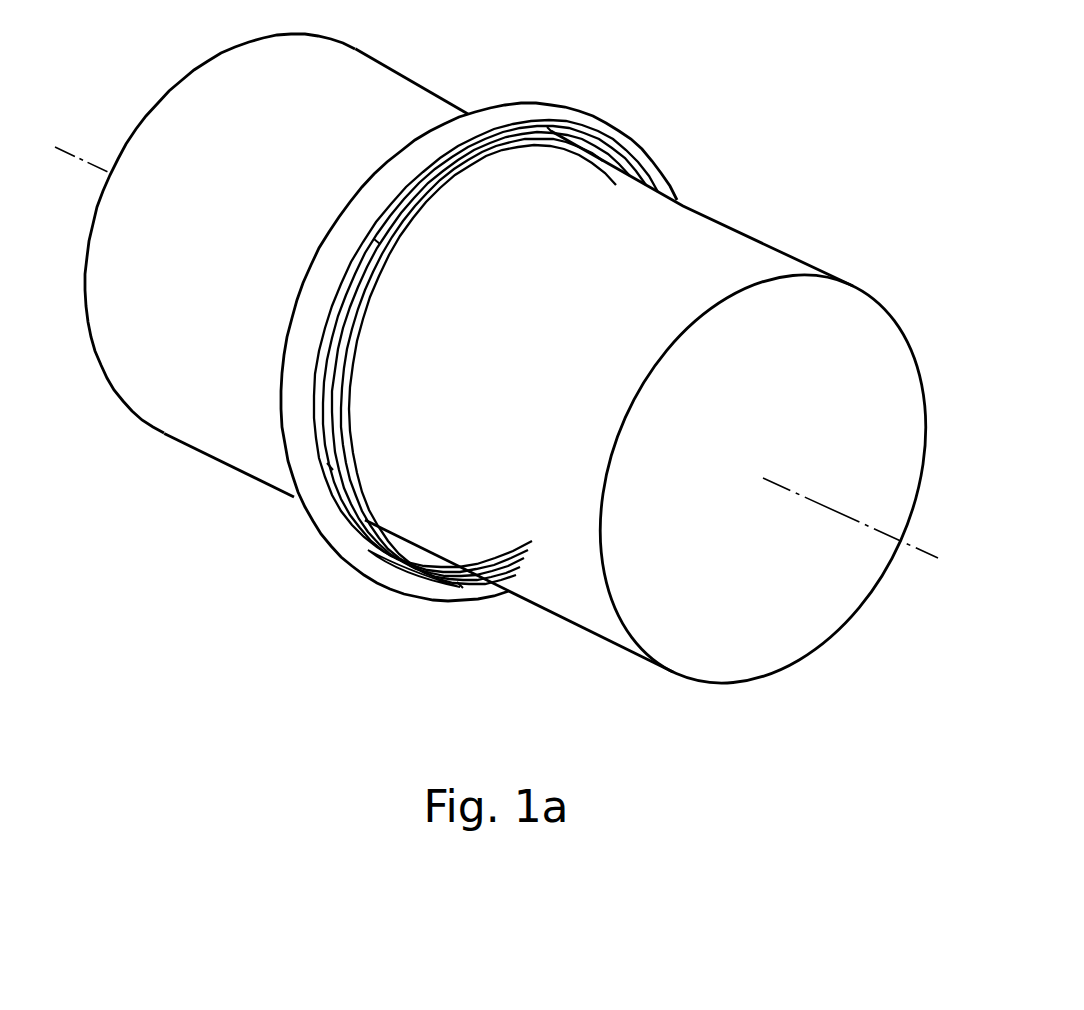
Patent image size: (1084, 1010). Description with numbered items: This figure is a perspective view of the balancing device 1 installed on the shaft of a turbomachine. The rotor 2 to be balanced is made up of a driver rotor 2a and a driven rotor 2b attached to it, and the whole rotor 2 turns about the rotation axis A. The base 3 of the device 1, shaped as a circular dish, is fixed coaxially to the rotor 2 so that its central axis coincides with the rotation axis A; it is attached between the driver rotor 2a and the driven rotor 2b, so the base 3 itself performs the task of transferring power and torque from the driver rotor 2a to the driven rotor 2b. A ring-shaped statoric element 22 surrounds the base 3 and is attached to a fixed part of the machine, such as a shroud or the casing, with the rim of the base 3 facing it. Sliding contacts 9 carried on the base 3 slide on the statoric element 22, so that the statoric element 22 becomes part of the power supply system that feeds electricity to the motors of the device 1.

The rotation axis A is at (77, 157).
The device for balancing a rotor 1 is at (337, 547).
The rotor 2 is at (537, 608).
The driver rotor 2a is at (158, 434).
The driven rotor 2b is at (590, 634).
The base 3 is at (410, 567).
The sliding contacts 9 is at (377, 242).
The statoric element 22 is at (644, 158).